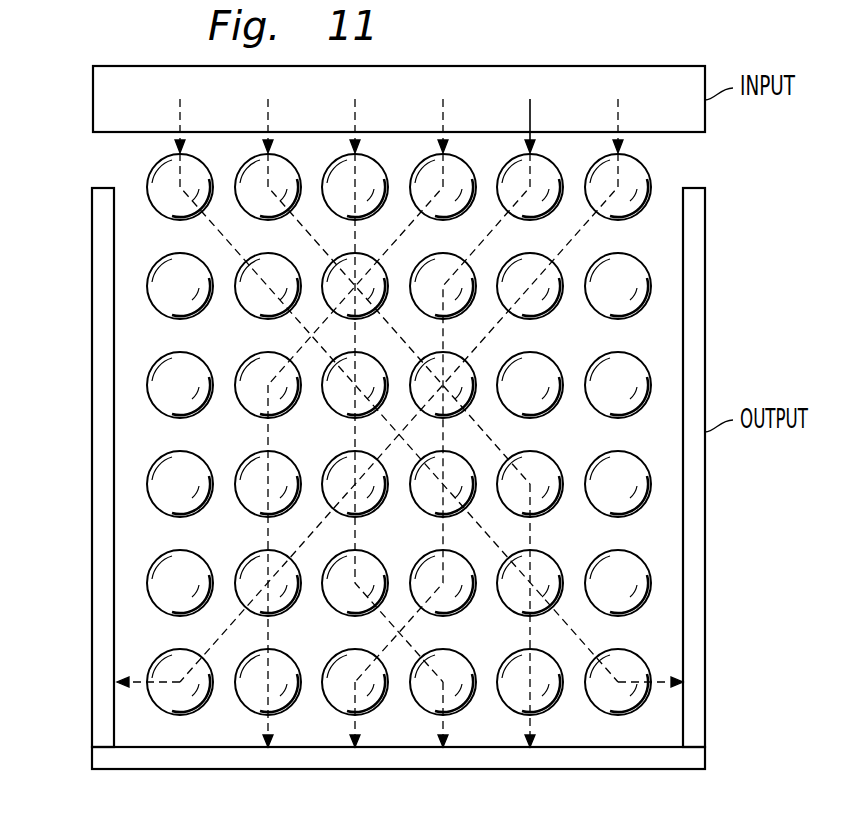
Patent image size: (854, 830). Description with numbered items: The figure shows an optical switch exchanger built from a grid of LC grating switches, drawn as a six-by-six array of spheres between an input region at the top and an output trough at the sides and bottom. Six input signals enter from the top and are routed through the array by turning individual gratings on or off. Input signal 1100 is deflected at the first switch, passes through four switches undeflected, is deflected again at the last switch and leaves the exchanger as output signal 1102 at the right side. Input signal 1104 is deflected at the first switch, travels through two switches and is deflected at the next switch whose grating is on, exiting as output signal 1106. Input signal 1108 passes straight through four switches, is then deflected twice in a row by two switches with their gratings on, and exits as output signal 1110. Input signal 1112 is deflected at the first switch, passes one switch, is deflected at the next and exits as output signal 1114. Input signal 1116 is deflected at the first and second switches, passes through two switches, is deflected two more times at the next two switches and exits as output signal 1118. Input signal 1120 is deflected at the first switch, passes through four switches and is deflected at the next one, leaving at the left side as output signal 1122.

The input signal 1100 is at (178, 113).
The input signal 1104 is at (266, 113).
The input signal 1108 is at (353, 113).
The input signal 1112 is at (445, 113).
The input signal 1116 is at (532, 113).
The input signal 1120 is at (620, 113).
The output signal 1102 is at (705, 682).
The output signal 1122 is at (115, 682).
The output signal 1106 is at (530, 752).
The output signal 1110 is at (443, 752).
The output signal 1114 is at (268, 752).
The output signal 1118 is at (355, 752).